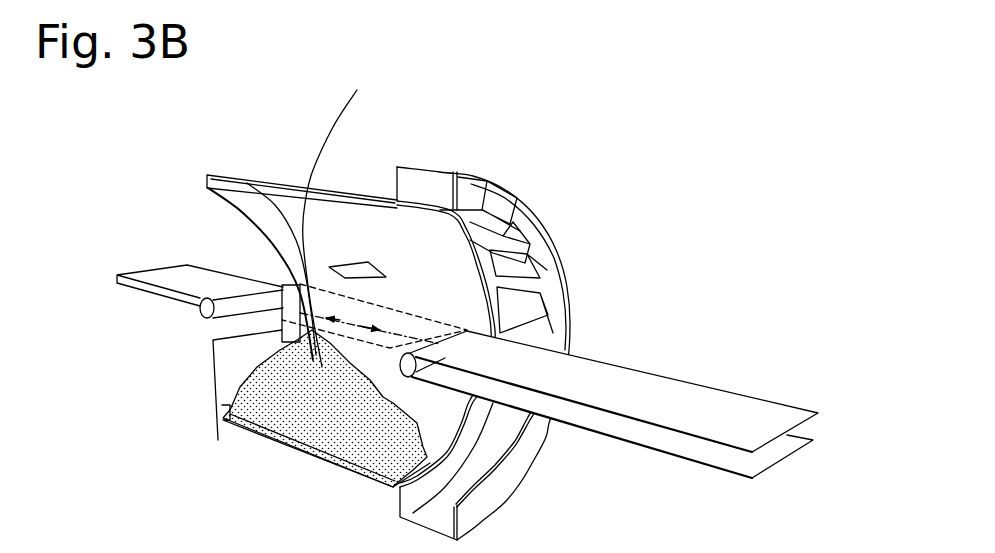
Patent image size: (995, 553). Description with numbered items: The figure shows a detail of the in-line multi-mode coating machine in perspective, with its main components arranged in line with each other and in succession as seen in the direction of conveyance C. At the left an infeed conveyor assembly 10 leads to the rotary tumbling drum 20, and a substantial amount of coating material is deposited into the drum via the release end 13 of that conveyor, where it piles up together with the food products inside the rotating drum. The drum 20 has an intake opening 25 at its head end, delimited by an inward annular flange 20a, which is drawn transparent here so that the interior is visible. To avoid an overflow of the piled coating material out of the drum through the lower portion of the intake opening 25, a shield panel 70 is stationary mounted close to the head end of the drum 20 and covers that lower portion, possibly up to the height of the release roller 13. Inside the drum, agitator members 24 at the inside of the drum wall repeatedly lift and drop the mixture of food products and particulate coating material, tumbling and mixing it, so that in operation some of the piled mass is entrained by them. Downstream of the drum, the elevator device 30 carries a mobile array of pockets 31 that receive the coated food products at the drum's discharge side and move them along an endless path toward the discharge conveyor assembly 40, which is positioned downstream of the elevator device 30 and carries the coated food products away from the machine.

The infeed conveyor assembly 10 is at (175, 257).
The release end 13 is at (201, 312).
The rotary tumbling drum 20 is at (342, 178).
The inward annular flange 20a is at (248, 180).
The agitator members 24 is at (370, 272).
The intake opening 25 is at (265, 241).
The elevator device 30 is at (517, 332).
The pockets 31 is at (515, 262).
The discharge conveyor assembly 40 is at (682, 366).
The shield panel 70 is at (222, 373).
The direction of conveyance C is at (340, 220).